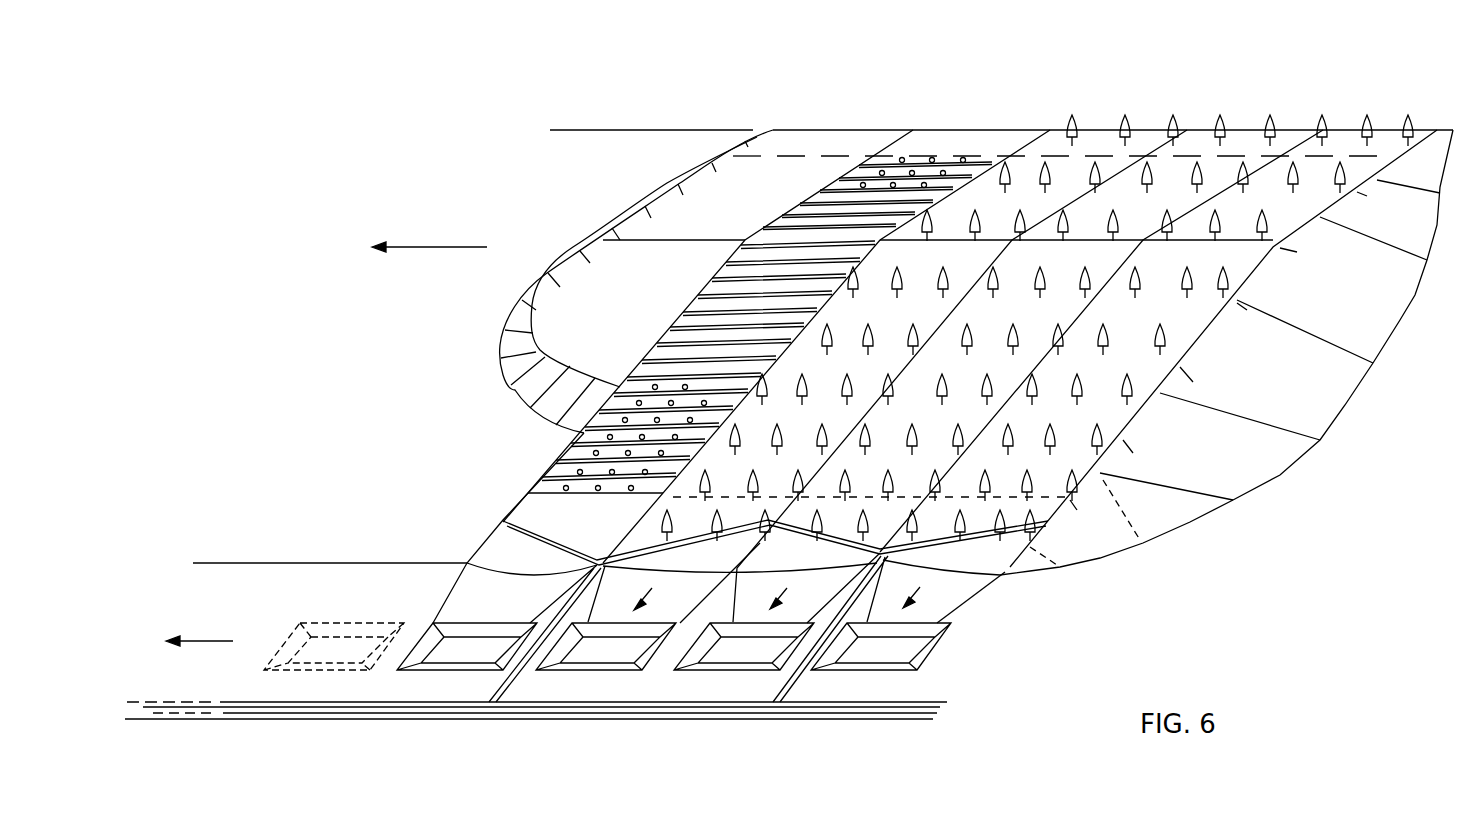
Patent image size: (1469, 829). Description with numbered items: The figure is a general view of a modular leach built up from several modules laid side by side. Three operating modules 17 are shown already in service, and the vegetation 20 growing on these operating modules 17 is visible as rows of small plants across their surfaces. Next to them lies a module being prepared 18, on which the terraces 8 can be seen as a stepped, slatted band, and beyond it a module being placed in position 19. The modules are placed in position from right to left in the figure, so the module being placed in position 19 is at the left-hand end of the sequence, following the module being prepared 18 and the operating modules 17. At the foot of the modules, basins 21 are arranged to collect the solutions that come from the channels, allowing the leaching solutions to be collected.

The terraces 8 is at (567, 467).
The operating modules 17 is at (1140, 130).
The module being prepared 18 is at (980, 130).
The module being placed in position 19 is at (833, 130).
The vegetation 20 is at (1130, 388).
The basins 21 is at (593, 653).